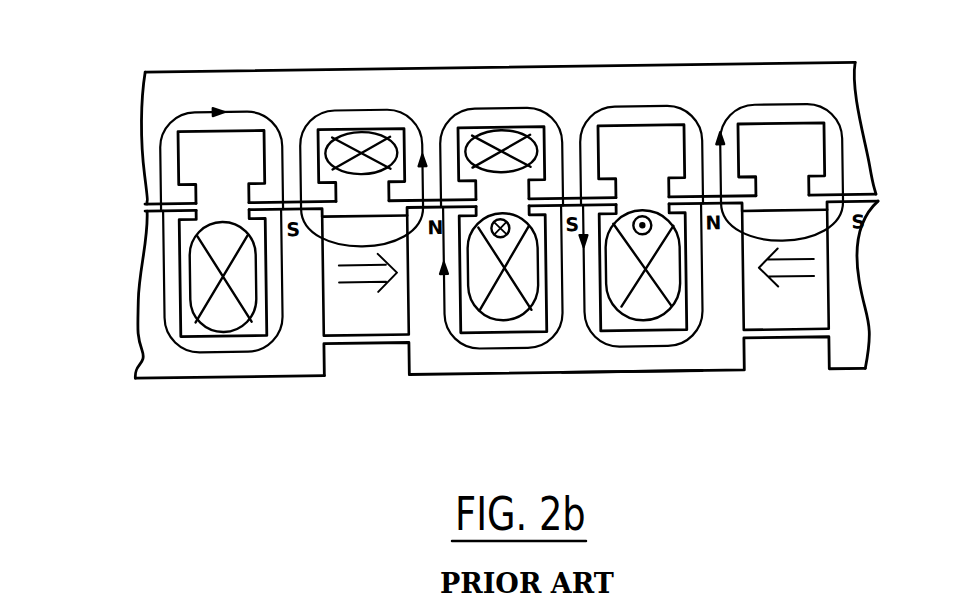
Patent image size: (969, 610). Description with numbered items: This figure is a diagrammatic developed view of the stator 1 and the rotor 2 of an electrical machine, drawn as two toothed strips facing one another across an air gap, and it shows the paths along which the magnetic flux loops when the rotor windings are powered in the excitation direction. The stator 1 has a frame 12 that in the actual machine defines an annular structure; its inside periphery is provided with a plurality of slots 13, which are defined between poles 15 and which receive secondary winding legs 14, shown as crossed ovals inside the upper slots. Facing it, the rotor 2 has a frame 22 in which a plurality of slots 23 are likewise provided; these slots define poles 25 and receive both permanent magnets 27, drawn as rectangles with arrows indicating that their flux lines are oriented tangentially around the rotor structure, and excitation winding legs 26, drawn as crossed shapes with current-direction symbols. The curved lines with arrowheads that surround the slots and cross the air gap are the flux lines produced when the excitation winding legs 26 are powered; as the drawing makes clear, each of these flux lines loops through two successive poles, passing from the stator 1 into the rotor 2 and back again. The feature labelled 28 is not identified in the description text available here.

The stator 1 is at (126, 128).
The rotor 2 is at (129, 294).
The frame 12 is at (650, 115).
The slots 13 is at (185, 150).
The secondary winding legs 14 is at (366, 149).
The poles 15 is at (581, 204).
The frame 22 is at (600, 372).
The slots 23 is at (190, 334).
The poles 25 is at (733, 205).
The excitation winding legs 26 is at (617, 298).
The permanent magnets 27 is at (378, 328).
The recess below magnet 28 is at (349, 348).